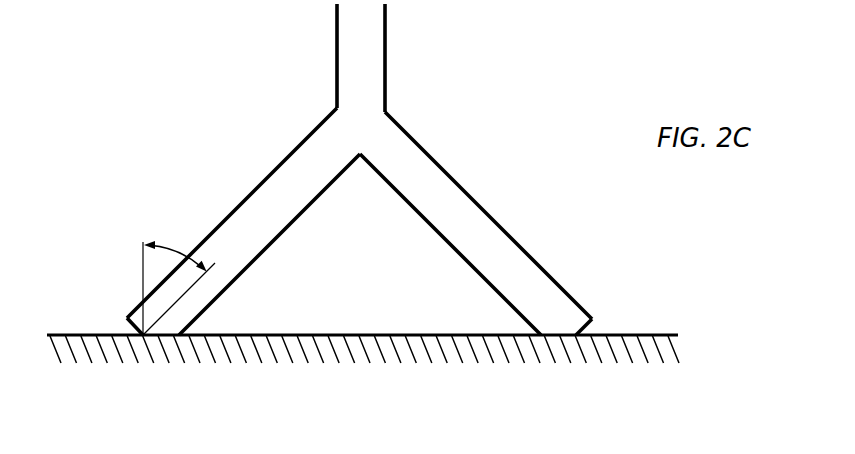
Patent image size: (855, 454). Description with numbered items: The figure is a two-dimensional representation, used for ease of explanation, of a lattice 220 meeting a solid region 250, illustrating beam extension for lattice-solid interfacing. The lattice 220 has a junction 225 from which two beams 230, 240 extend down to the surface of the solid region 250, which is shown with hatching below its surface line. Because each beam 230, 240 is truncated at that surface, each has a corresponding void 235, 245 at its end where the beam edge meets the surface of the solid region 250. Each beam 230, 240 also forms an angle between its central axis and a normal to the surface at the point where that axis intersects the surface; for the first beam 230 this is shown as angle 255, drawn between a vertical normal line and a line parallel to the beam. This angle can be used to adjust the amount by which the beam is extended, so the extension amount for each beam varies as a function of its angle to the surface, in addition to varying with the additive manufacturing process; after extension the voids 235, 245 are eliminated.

The lattice 220 is at (189, 62).
The junction 225 is at (358, 123).
The beam 230 is at (243, 204).
The void 235 is at (120, 325).
The beam 240 is at (489, 214).
The void 245 is at (596, 325).
The solid region 250 is at (641, 381).
The angle 255 is at (179, 253).